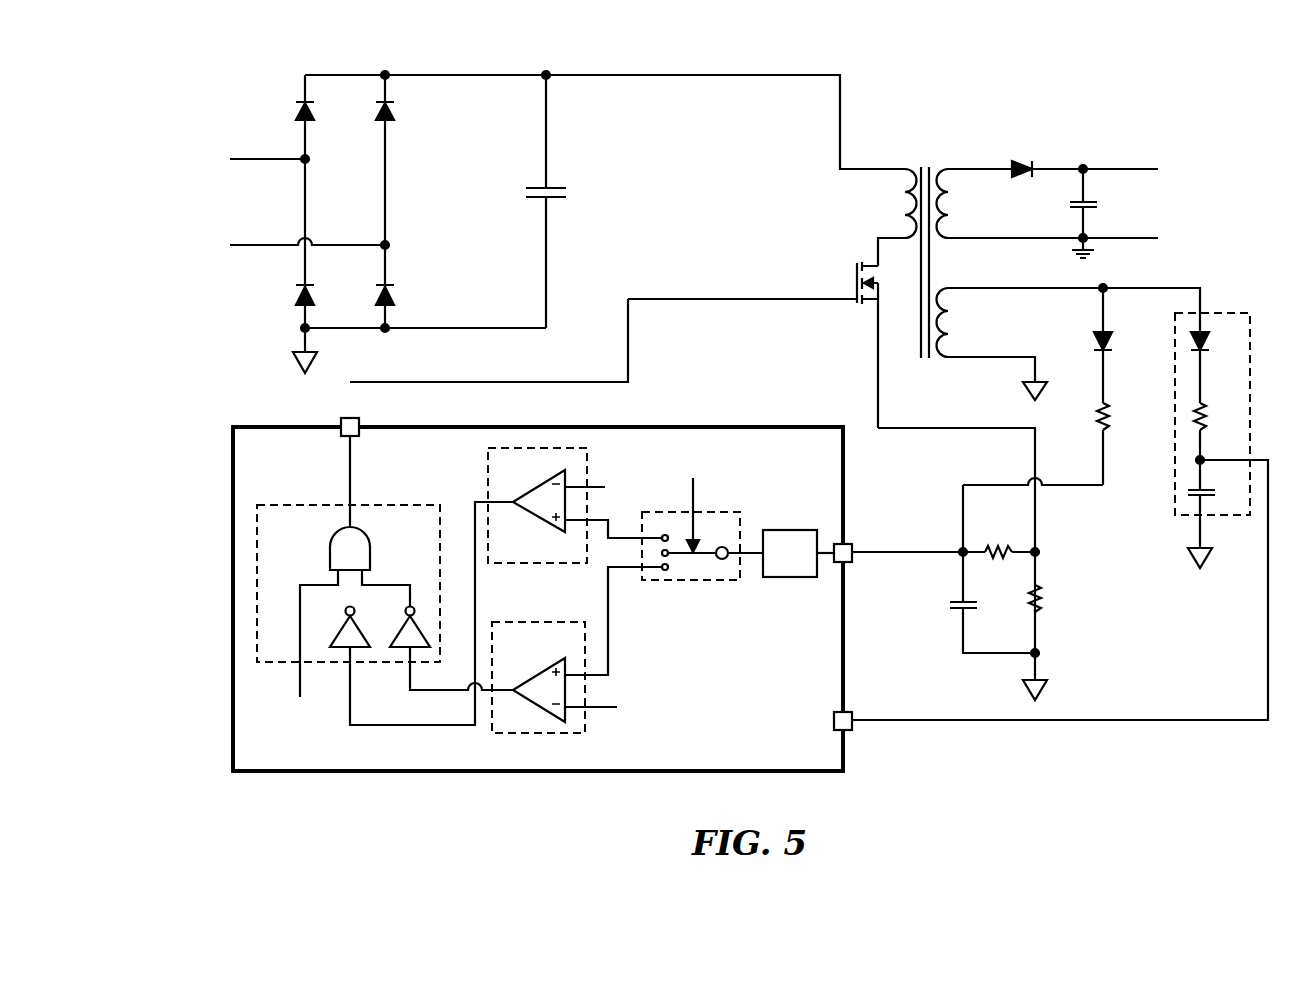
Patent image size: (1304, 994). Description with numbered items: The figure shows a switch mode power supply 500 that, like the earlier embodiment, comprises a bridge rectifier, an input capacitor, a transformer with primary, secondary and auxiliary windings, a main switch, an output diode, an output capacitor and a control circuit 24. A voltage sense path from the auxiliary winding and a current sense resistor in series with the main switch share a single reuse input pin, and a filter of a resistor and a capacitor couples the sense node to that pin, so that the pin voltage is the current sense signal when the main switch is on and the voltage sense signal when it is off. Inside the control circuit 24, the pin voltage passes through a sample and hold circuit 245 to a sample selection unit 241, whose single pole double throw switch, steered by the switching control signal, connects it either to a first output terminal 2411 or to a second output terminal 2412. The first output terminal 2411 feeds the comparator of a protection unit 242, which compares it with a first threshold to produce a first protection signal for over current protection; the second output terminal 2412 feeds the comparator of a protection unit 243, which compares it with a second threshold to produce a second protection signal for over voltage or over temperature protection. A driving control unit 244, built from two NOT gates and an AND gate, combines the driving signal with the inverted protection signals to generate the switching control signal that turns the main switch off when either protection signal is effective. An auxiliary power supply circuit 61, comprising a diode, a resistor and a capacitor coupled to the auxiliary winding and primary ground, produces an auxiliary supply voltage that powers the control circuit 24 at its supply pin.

The switch mode power supply 500 is at (1178, 147).
The control circuit 24 is at (845, 758).
The driving control unit 244 is at (297, 507).
The protection unit 242 is at (532, 564).
The protection unit 243 is at (540, 737).
The sample selection unit 241 is at (716, 580).
The first output terminal 2411 is at (626, 535).
The second output terminal 2412 is at (624, 568).
The sample and hold circuit 245 is at (776, 578).
The auxiliary power supply circuit 61 is at (1169, 521).